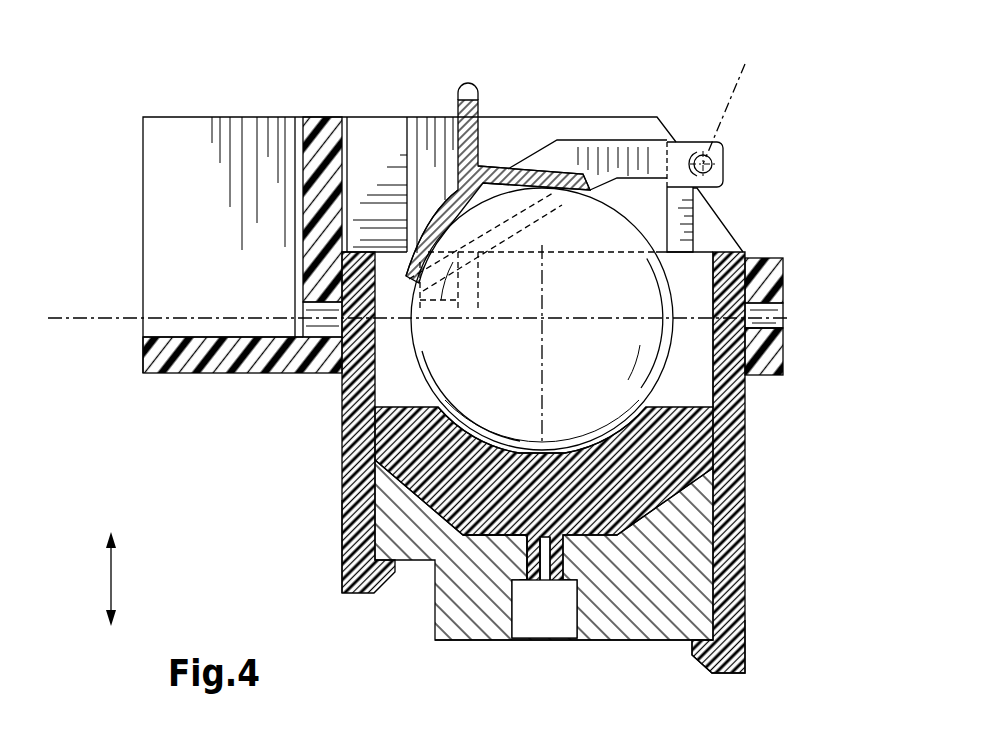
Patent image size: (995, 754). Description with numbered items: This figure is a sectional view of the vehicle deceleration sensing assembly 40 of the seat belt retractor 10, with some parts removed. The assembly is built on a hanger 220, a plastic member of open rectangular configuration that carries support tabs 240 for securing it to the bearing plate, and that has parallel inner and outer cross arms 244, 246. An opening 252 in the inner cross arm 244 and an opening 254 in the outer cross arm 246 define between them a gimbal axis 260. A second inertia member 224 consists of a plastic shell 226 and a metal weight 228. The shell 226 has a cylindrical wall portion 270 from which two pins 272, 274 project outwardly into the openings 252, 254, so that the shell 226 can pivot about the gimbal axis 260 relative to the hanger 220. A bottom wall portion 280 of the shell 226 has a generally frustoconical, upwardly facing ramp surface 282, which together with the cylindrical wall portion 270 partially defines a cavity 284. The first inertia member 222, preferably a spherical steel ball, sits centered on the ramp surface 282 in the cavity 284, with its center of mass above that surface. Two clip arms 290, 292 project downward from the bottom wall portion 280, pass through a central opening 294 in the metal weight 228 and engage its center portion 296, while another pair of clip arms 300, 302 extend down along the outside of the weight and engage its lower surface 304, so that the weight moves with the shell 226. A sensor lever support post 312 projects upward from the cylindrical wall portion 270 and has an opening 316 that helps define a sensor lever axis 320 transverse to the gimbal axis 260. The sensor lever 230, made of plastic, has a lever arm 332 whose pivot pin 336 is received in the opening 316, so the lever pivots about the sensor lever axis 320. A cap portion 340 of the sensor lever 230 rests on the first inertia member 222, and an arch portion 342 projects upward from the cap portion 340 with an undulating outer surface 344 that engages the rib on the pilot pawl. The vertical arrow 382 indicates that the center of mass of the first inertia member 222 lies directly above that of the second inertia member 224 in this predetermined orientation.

The retractor 10 is at (120, 456).
The vehicle deceleration sensing assembly 40 is at (514, 46).
The hanger 220 is at (368, 230).
The first inertia member 222 is at (613, 295).
The second inertia member 224 is at (752, 634).
The plastic shell 226 is at (562, 455).
The metal weight 228 is at (524, 603).
The sensor lever 230 is at (629, 132).
The support tabs 240 is at (237, 148).
The inner cross arm 244 is at (326, 160).
The outer cross arm 246 is at (778, 350).
The opening 252 is at (303, 318).
The opening 254 is at (770, 323).
The gimbal axis 260 is at (100, 318).
The cylindrical wall portion 270 is at (350, 404).
The pin 272 is at (317, 310).
The pin 274 is at (772, 312).
The bottom wall portion 280 is at (637, 463).
The ramp surface 282 is at (524, 452).
The cavity 284 is at (683, 280).
The clip arm 290 is at (533, 600).
The clip arm 292 is at (550, 600).
The central opening 294 is at (573, 620).
The center portion 296 is at (517, 550).
The clip arm 300 is at (344, 545).
The clip arm 302 is at (747, 558).
The lower surface 304 is at (637, 643).
The sensor lever support post 312 is at (704, 191).
The opening 316 is at (713, 163).
The sensor lever axis 320 is at (724, 148).
The sensor lever arm 332 is at (573, 140).
The pivot pin 336 is at (741, 102).
The cap portion 340 is at (527, 168).
The arch portion 342 is at (458, 146).
The undulating outer surface 344 is at (462, 90).
The arrow 382 is at (136, 579).